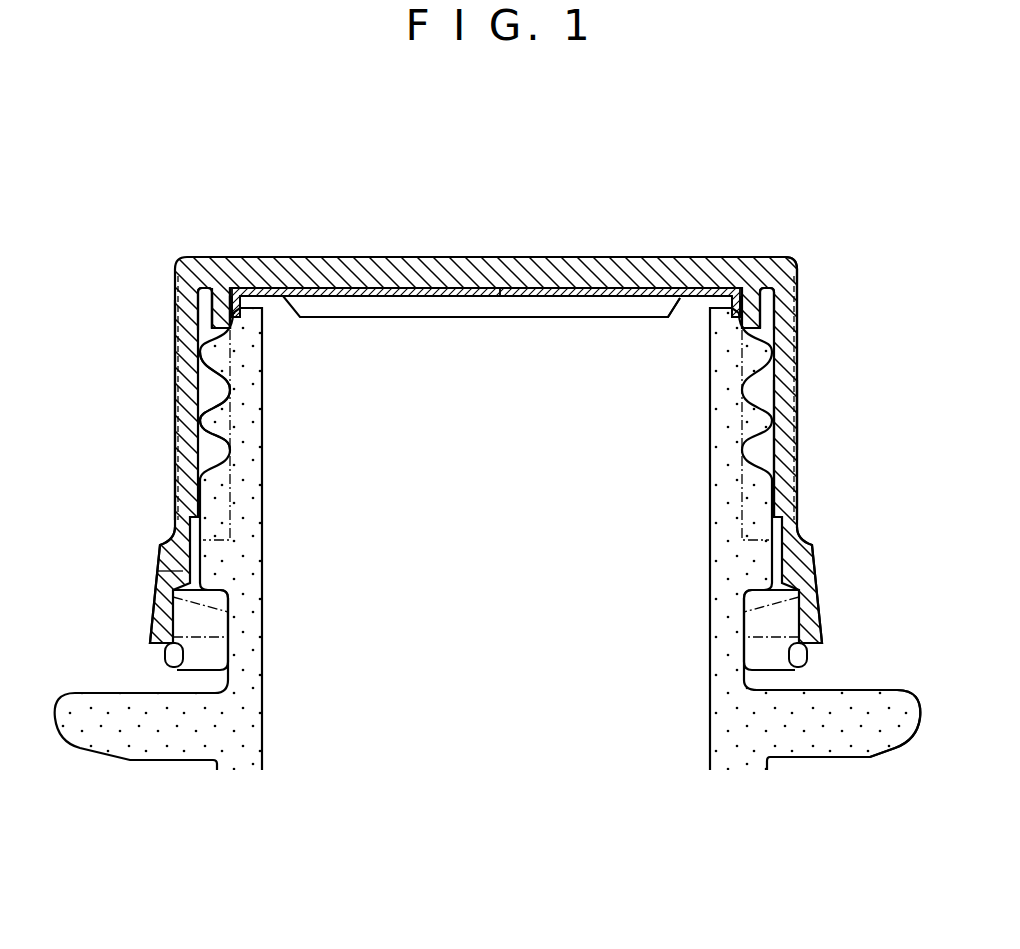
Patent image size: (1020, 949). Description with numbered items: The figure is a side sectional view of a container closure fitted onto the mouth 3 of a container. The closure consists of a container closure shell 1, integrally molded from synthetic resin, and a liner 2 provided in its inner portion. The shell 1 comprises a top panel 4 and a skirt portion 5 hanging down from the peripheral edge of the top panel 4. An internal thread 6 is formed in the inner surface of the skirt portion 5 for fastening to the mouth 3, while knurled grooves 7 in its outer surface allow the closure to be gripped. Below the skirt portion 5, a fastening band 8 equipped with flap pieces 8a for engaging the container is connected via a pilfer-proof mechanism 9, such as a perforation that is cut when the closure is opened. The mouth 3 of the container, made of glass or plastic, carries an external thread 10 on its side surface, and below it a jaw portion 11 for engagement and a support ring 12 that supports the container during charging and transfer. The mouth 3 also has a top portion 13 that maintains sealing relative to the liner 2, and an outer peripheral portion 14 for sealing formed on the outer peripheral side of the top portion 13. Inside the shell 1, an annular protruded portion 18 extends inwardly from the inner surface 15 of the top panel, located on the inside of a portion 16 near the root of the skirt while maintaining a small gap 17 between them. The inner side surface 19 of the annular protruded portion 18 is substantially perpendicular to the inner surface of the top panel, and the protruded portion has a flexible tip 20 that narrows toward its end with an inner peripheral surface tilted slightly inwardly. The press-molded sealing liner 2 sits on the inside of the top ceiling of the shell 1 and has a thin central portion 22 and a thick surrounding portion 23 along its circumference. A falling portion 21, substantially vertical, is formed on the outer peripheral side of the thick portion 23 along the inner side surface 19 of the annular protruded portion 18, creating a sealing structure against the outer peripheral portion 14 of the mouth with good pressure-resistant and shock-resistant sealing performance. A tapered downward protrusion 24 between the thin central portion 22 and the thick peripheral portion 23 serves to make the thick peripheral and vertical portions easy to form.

The container closure shell 1 is at (500, 248).
The liner 2 is at (392, 317).
The mouth of the container 3 is at (262, 548).
The top panel 4 is at (402, 257).
The skirt portion 5 is at (177, 405).
The internal thread 6 is at (232, 402).
The knurled grooves 7 is at (798, 340).
The fastening band 8 is at (153, 604).
The flap pieces 8a is at (222, 628).
The pilfer-proof mechanism 9 is at (153, 574).
The external thread 10 is at (798, 418).
The jaw portion 11 is at (772, 510).
The support ring 12 is at (858, 690).
The top portion 13 is at (725, 257).
The outer peripheral portion for sealing 14 is at (771, 307).
The inner surface of the top panel 15 is at (445, 297).
The portion near the root of the skirt 16 is at (205, 294).
The small gap 17 is at (210, 318).
The annular protruded portion 18 is at (232, 287).
The inner side surface 19 is at (232, 320).
The flexible tip 20 is at (228, 332).
The falling portion 21 is at (745, 332).
The thin central portion 22 is at (537, 297).
The thick surrounding portion 23 is at (718, 301).
The tapered downward protrusion 24 is at (672, 301).